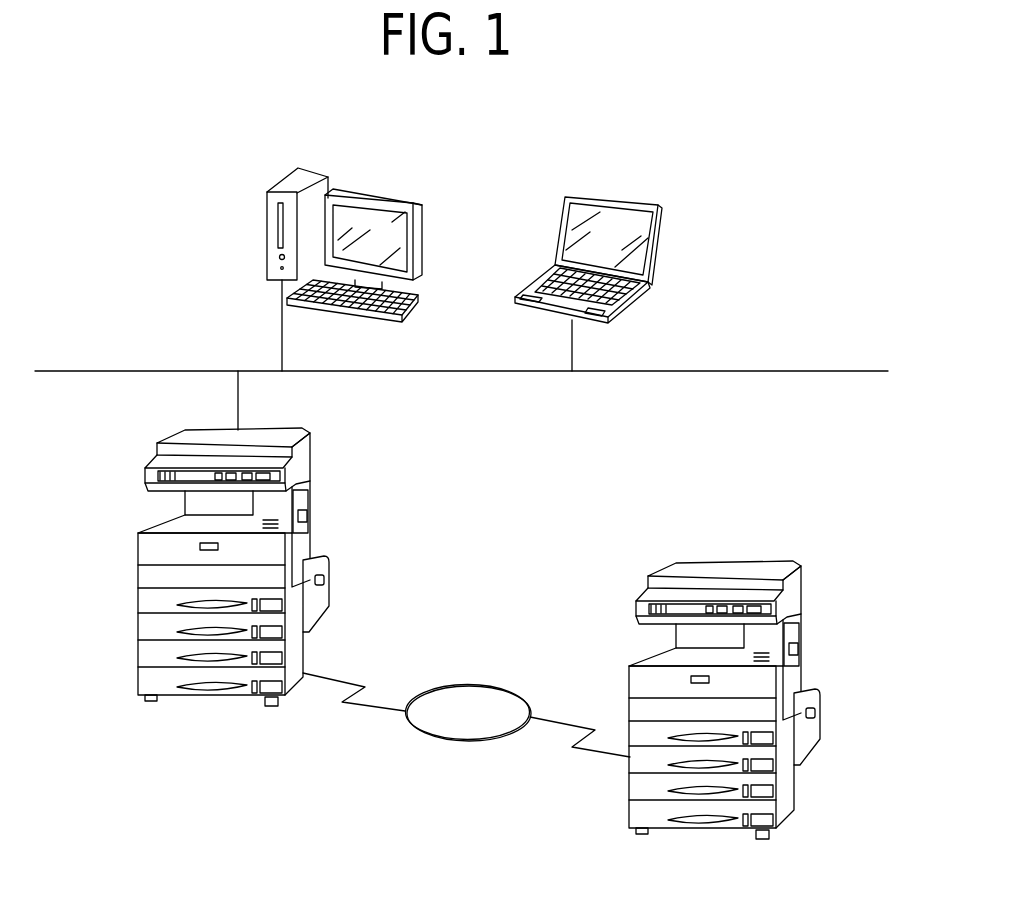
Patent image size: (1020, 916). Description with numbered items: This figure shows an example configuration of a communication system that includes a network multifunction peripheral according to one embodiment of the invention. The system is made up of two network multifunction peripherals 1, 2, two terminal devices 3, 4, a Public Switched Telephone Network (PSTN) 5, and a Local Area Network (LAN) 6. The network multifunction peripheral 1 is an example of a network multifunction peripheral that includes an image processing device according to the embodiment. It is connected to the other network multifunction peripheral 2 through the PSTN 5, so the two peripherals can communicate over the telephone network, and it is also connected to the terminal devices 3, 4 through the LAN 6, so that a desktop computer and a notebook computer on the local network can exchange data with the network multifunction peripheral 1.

The network multifunction peripheral 1 is at (157, 453).
The network multifunction peripheral 2 is at (648, 586).
The terminal device 3 is at (390, 198).
The terminal device 4 is at (623, 197).
The Public Switched Telephone Network (PSTN) 5 is at (453, 685).
The Local Area Network (LAN) 6 is at (783, 371).